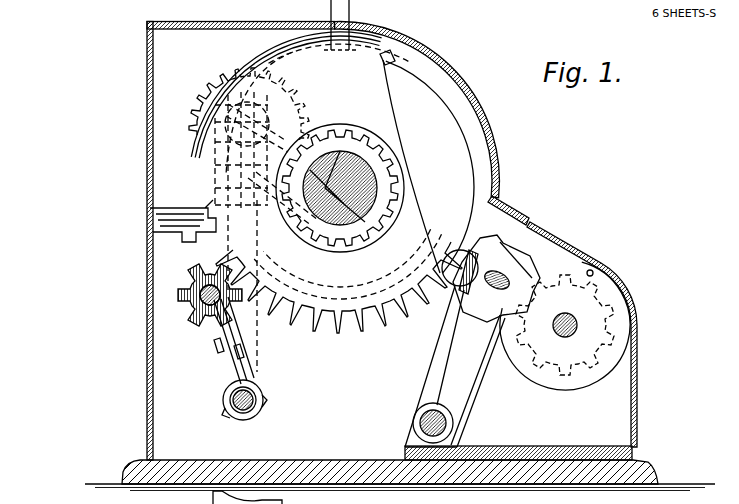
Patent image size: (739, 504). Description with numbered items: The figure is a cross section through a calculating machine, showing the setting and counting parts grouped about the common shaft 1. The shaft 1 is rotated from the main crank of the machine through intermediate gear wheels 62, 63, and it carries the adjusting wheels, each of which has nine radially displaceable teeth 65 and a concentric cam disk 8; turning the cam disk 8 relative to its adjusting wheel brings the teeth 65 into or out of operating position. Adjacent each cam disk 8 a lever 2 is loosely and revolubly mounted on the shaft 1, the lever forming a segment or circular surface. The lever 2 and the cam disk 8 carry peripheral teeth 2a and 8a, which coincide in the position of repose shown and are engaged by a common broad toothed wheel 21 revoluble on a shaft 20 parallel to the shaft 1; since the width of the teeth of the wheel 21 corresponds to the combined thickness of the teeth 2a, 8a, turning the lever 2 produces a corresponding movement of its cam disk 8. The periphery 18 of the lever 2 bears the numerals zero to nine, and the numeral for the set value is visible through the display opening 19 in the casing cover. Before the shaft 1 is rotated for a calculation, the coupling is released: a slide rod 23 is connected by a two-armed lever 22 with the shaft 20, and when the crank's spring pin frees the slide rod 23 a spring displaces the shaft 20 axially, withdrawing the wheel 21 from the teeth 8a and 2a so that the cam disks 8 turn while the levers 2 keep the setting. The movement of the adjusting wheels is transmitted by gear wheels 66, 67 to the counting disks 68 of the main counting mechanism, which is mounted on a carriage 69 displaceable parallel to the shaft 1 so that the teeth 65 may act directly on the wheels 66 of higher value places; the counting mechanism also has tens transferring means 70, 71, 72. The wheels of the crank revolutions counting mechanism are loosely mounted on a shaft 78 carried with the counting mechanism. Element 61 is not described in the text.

The common shaft 1 is at (362, 188).
The lever 2 is at (397, 113).
The peripheral teeth of lever 2a is at (352, 17).
The cam disk 8 is at (455, 137).
The peripheral teeth of cam disk 8a is at (339, 202).
The periphery of lever 18 is at (272, 52).
The display opening 19 is at (395, 37).
The shaft 20 is at (192, 300).
The toothed wheel 21 is at (212, 333).
The two-armed lever 22 is at (230, 378).
The slide rod 23 is at (160, 252).
The link 61 is at (258, 341).
The intermediate gear wheel 62 is at (212, 85).
The intermediate gear wheel 63 is at (342, 125).
The radially displaceable teeth 65 is at (214, 183).
The gear wheel 66 is at (520, 250).
The gear wheel 67 is at (604, 378).
The counting disk 68 is at (556, 388).
The carriage 69 is at (570, 448).
The tens transferring means 70 is at (466, 380).
The tens transferring means 71 is at (594, 263).
The tens transferring means 72 is at (398, 59).
The shaft 78 is at (496, 272).